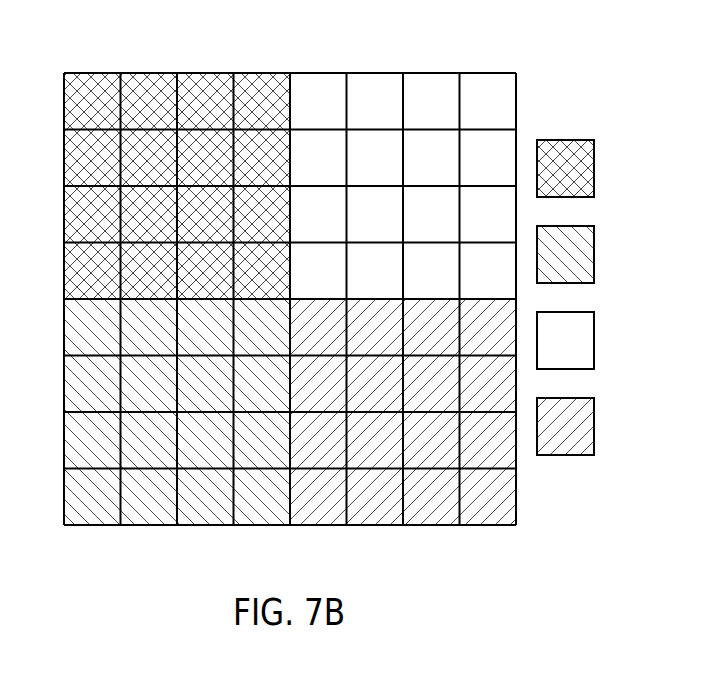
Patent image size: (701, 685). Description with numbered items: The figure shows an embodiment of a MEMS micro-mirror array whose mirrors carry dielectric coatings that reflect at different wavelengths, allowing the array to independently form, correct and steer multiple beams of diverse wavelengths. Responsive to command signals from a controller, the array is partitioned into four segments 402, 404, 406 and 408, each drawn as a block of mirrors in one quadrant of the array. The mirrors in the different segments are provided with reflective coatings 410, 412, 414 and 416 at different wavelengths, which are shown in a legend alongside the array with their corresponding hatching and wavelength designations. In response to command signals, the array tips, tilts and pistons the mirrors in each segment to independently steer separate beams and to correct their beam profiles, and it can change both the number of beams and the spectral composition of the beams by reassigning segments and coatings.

The segment 402 is at (182, 58).
The segment 406 is at (410, 57).
The segment 404 is at (173, 537).
The segment 408 is at (398, 537).
The reflective coating 410 is at (567, 139).
The reflective coating 412 is at (567, 225).
The reflective coating 414 is at (567, 311).
The reflective coating 416 is at (567, 397).